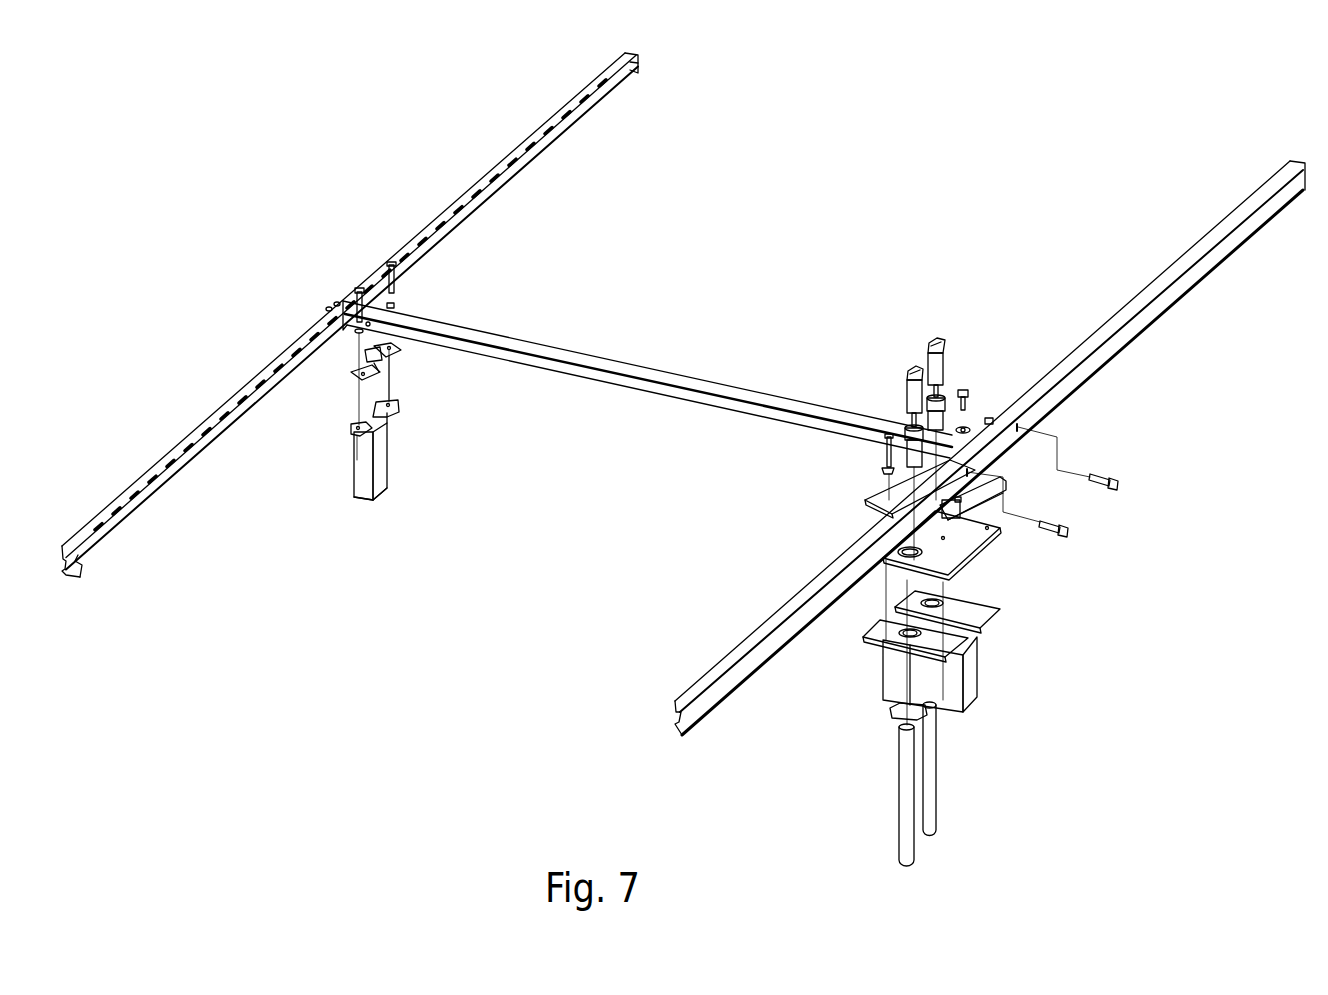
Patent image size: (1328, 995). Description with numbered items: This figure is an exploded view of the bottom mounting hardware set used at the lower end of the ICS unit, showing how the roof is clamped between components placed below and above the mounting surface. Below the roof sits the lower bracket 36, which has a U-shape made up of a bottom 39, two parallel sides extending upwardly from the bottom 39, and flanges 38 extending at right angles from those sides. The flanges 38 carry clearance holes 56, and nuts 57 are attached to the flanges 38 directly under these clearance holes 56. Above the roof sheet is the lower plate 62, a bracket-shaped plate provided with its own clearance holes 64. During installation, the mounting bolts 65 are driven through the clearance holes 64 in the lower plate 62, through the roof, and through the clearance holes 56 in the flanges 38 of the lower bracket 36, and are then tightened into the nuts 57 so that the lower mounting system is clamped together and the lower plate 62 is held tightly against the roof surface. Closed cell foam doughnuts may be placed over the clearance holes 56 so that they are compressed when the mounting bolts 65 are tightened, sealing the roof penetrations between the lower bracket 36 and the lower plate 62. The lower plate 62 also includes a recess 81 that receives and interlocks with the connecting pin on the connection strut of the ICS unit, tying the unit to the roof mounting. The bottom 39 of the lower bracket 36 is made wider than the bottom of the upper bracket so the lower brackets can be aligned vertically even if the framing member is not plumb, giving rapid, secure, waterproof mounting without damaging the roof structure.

The mounting bolts 65 is at (398, 278).
The lower plate 62 is at (402, 350).
The recess 81 is at (392, 382).
The clearance holes 64 is at (351, 373).
The clearance holes 56 is at (350, 428).
The flanges 38 is at (350, 426).
The nuts 57 is at (352, 460).
The lower bracket 36 is at (384, 466).
The bottom 39 is at (388, 494).